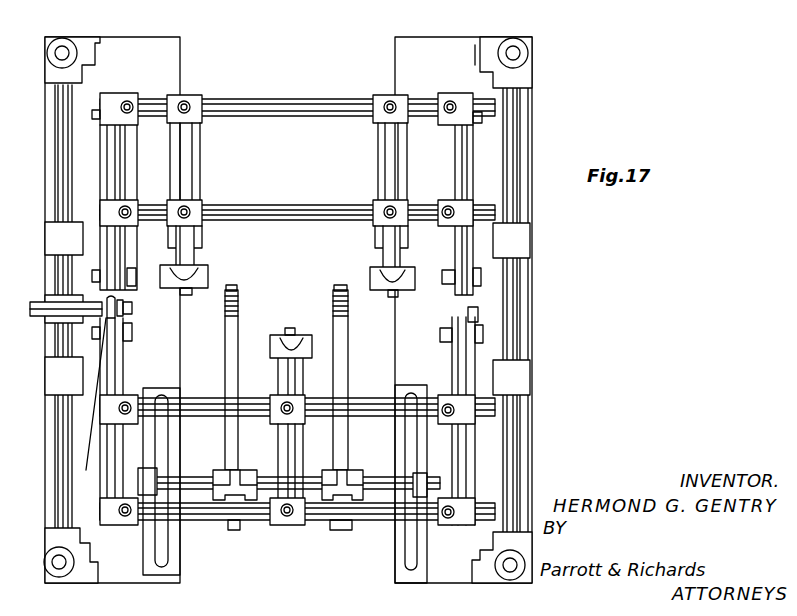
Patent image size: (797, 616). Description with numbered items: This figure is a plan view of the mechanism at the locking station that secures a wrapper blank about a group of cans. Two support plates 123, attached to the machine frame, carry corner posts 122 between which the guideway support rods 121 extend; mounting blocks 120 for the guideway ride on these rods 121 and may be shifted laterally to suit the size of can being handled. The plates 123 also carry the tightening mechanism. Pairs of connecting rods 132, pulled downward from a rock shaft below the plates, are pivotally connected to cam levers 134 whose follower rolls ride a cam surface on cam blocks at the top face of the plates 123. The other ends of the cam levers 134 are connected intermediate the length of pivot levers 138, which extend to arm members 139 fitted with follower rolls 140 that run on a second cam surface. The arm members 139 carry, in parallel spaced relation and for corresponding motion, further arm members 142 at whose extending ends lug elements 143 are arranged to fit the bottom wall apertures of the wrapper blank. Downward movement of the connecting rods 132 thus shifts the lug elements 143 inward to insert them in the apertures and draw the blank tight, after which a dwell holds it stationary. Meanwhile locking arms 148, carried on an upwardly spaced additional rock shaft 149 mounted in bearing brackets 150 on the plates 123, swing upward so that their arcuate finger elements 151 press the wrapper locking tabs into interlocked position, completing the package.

The mounting blocks 120 is at (530, 243).
The support rods 121 is at (523, 112).
The corner posts 122 is at (76, 36).
The support plates 123 is at (134, 40).
The connecting rods 132 is at (468, 320).
The cam levers 134 is at (478, 193).
The pivot levers 138 is at (462, 132).
The arm members 139 is at (146, 126).
The follower rolls 140 is at (478, 213).
The further arm members 142 is at (200, 158).
The lug elements 143 is at (200, 291).
The locking arm 148 is at (226, 380).
The additional rock shaft 149 is at (195, 472).
The bearing brackets 150 is at (180, 575).
The finger element 151 is at (238, 300).